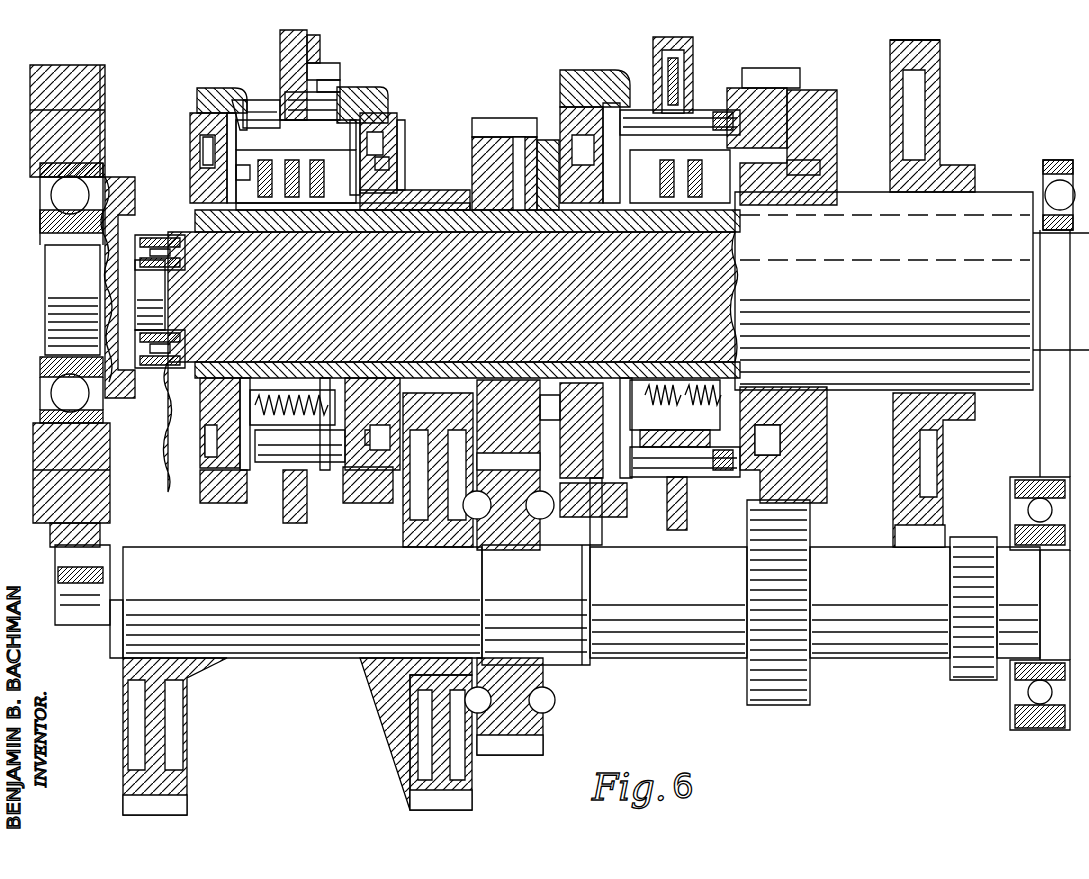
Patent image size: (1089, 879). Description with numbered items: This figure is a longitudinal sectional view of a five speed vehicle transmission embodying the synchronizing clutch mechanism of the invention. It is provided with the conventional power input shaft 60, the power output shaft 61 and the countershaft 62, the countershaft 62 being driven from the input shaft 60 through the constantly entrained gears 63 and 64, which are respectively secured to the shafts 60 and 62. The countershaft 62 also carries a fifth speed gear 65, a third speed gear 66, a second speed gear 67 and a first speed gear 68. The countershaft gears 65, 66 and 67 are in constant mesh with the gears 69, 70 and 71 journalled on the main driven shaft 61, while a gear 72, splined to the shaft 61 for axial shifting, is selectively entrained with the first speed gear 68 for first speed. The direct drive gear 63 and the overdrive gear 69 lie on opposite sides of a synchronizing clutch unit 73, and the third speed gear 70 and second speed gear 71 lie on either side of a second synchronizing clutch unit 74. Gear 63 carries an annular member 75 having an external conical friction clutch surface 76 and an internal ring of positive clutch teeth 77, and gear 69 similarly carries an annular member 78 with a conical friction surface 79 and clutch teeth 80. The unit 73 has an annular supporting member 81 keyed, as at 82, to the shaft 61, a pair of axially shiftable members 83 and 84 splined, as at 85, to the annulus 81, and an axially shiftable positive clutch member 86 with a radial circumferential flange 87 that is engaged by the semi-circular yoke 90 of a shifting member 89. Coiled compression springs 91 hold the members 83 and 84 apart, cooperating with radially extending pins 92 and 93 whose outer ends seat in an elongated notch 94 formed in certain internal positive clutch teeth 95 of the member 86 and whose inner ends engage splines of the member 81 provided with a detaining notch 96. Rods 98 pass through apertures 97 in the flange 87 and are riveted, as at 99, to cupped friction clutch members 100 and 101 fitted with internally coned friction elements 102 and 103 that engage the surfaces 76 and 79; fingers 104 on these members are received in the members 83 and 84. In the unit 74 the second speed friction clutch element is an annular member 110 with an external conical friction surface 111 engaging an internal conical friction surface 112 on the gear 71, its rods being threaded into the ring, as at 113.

The power input shaft 60 is at (105, 238).
The power output shaft 61 is at (120, 310).
The countershaft 62 is at (168, 600).
The fourth speed or direct drive gear 63 is at (150, 235).
The constantly entrained gear 64 is at (160, 718).
The fifth speed gear 65 is at (440, 712).
The third speed gear 66 is at (530, 700).
The second speed gear 67 is at (760, 665).
The first speed gear 68 is at (965, 660).
The overdrive or fifth speed gear 69 is at (425, 192).
The third speed gear 70 is at (505, 140).
The second speed gear 71 is at (805, 100).
The gear 72 is at (915, 130).
The synchronizing clutch unit 73 is at (339, 73).
The second synchronizing clutch unit 74 is at (712, 77).
The annular member 75 is at (200, 140).
The external conical friction clutch surface 76 is at (195, 125).
The positive clutch teeth 77 is at (215, 294).
The annular member 78 is at (365, 150).
The external conical friction surface 79 is at (395, 110).
The positive clutch teeth 80 is at (389, 163).
The annular supporting member 81 is at (265, 200).
The spline 82 is at (312, 200).
The axially shiftable member 83 is at (248, 200).
The axially shiftable member 84 is at (330, 200).
The spline 85 is at (345, 205).
The positive clutch member 86 is at (636, 70).
The circumferential flange 87 is at (280, 82).
The shifting member 89 is at (314, 63).
The semi-circular yoke 90 is at (325, 92).
The coiled compression springs 91 is at (300, 393).
The radially extending pin 92 is at (240, 170).
The radially extending pin 93 is at (390, 140).
The elongated notch or recess 94 is at (305, 150).
The internal positive clutch teeth 95 is at (350, 205).
The notch or recess 96 is at (290, 200).
The apertures 97 is at (278, 462).
The transverse bar or rod 98 is at (260, 102).
The rivet securing 99 is at (250, 503).
The cupped friction clutch member 100 is at (207, 88).
The cupped friction clutch member 101 is at (370, 87).
The internally coned friction element 102 is at (560, 90).
The internally coned friction element 103 is at (380, 503).
The fingers 104 is at (95, 436).
The annular member 110 is at (760, 123).
The external conical friction surface 111 is at (720, 112).
The internal conical friction surface 112 is at (770, 90).
The threaded connection 113 is at (760, 88).